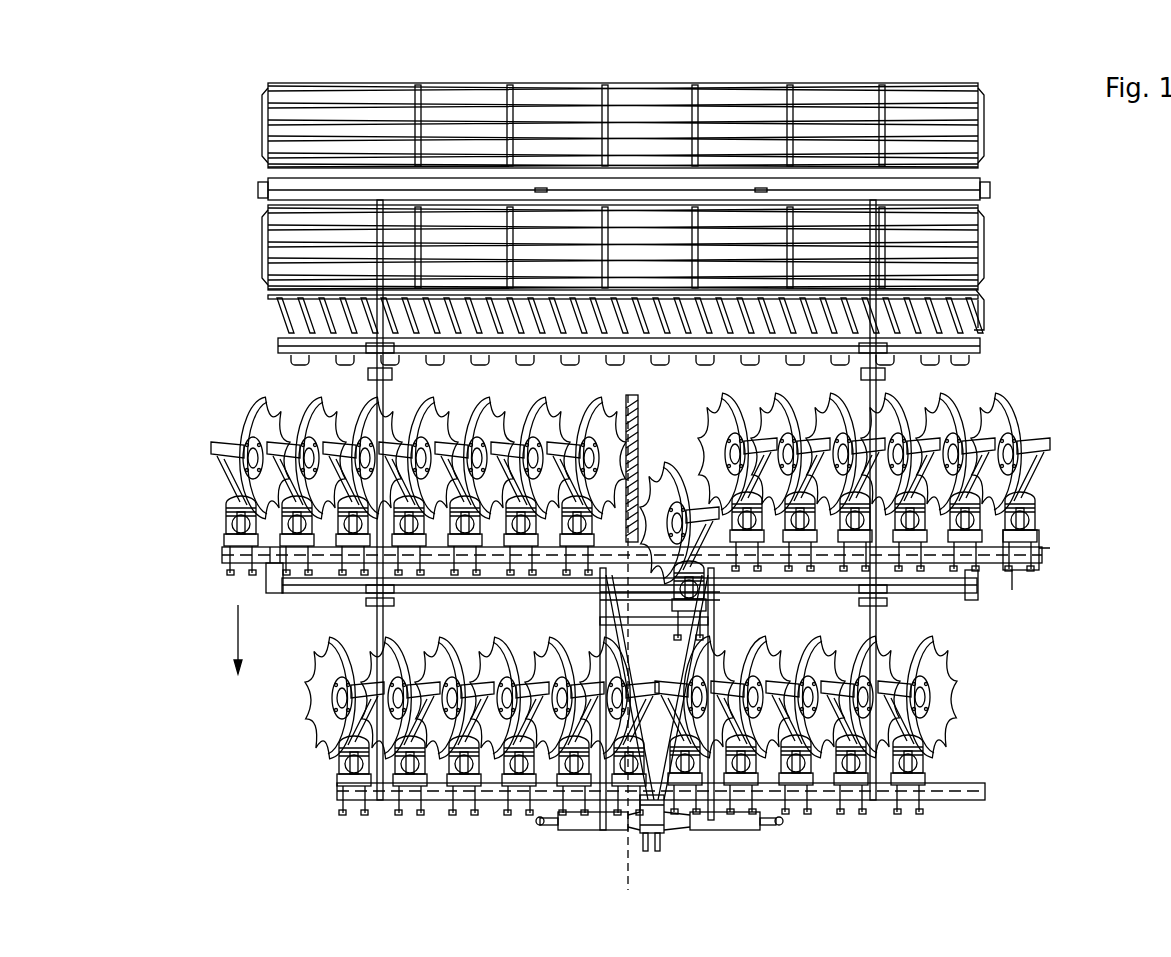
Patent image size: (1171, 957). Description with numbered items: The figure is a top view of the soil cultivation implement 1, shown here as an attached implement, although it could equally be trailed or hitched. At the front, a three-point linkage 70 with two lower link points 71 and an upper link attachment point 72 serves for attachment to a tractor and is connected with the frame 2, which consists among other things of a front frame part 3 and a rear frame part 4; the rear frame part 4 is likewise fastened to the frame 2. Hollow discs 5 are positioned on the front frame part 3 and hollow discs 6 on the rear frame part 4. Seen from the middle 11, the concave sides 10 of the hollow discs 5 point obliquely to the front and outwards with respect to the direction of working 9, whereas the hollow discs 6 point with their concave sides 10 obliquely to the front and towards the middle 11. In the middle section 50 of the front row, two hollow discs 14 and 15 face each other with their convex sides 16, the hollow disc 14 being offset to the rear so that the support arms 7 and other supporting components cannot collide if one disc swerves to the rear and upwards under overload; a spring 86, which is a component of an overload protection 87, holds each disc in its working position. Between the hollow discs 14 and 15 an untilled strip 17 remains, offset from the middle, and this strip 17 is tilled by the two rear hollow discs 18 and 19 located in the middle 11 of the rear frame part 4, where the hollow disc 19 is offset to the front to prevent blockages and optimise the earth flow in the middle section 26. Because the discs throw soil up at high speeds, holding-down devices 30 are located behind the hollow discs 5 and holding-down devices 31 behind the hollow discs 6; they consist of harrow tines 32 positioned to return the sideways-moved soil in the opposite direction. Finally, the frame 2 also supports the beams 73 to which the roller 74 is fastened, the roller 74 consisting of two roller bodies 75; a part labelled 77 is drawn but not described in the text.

The soil cultivation implement 1 is at (1030, 222).
The frame 2 is at (1060, 705).
The front frame part 3 is at (980, 787).
The rear frame part 4 is at (1012, 548).
The hollow discs 5 is at (935, 655).
The hollow discs 6 is at (995, 418).
The support arms 7 is at (1040, 478).
The direction of working 9 is at (228, 639).
The concave sides 10 is at (943, 716).
The middle 11 is at (632, 858).
The hollow disc 14 is at (510, 785).
The hollow disc 15 is at (620, 808).
The convex sides 16 is at (250, 430).
The untilled strip 17 is at (631, 395).
The hollow disc 18 is at (380, 387).
The hollow disc 19 is at (663, 472).
The middle section 26 is at (641, 455).
The holding-down devices 30 is at (968, 595).
The holding-down devices 31 is at (962, 352).
The harrow tines 32 is at (978, 318).
The middle section 50 is at (663, 750).
The three-point linkage 70 is at (725, 842).
The lower link points 71 is at (540, 825).
The upper link attachment point 72 is at (660, 838).
The beams 73 is at (330, 332).
The roller 74 is at (1040, 158).
The roller bodies 75 is at (267, 207).
The clamp bracket 77 is at (370, 357).
The spring 86 is at (1040, 508).
The overload protection 87 is at (1020, 531).